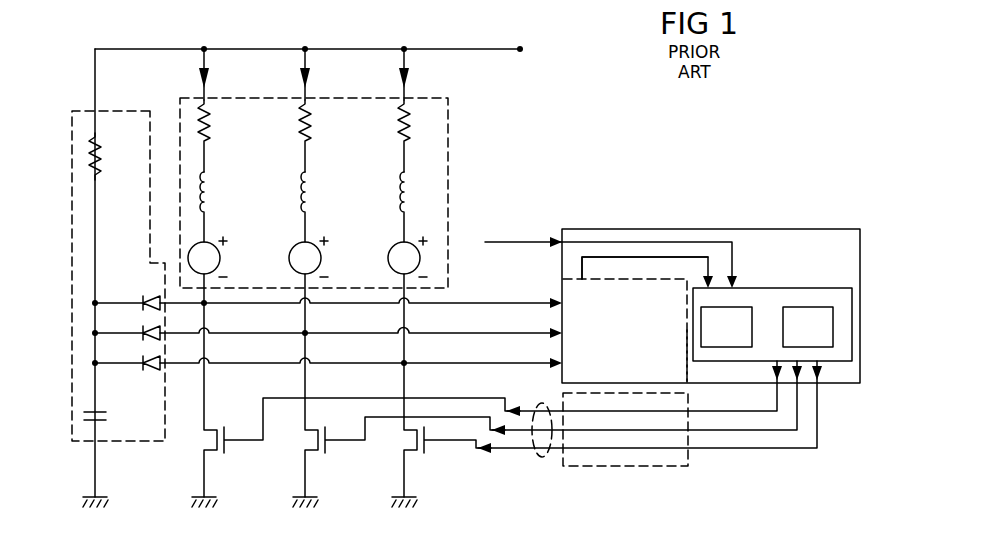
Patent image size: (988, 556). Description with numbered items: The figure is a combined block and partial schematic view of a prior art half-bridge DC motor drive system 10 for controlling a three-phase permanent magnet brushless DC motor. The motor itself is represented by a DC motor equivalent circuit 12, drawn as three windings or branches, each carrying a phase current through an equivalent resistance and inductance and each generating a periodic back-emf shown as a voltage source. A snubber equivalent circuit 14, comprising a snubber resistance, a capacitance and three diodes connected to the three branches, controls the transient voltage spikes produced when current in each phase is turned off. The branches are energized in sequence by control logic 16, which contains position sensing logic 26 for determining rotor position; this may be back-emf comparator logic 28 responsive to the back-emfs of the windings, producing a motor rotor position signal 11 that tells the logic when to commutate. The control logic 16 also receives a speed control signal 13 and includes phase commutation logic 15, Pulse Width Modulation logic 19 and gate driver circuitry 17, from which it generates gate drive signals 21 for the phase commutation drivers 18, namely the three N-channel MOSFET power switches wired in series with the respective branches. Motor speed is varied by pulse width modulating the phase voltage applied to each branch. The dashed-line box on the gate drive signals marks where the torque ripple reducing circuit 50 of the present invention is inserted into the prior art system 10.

The system 10 is at (676, 170).
The DC motor equivalent circuit 12 is at (448, 110).
The snubber equivalent circuit 14 is at (78, 110).
The control logic 16 is at (774, 206).
The speed control signal 13 is at (533, 243).
The motor rotor position signal 11 is at (582, 268).
The position sensing logic 26 is at (616, 268).
The phase commutation logic 15 is at (778, 288).
The Pulse Width Modulation logic 19 is at (742, 307).
The gate driver circuitry 17 is at (808, 307).
The back-emf comparator logic 28 is at (689, 377).
The circuit for reducing motor torque ripple 50 is at (648, 467).
The gate drive signals 21 is at (542, 457).
The phase commutation drivers 18 is at (375, 525).